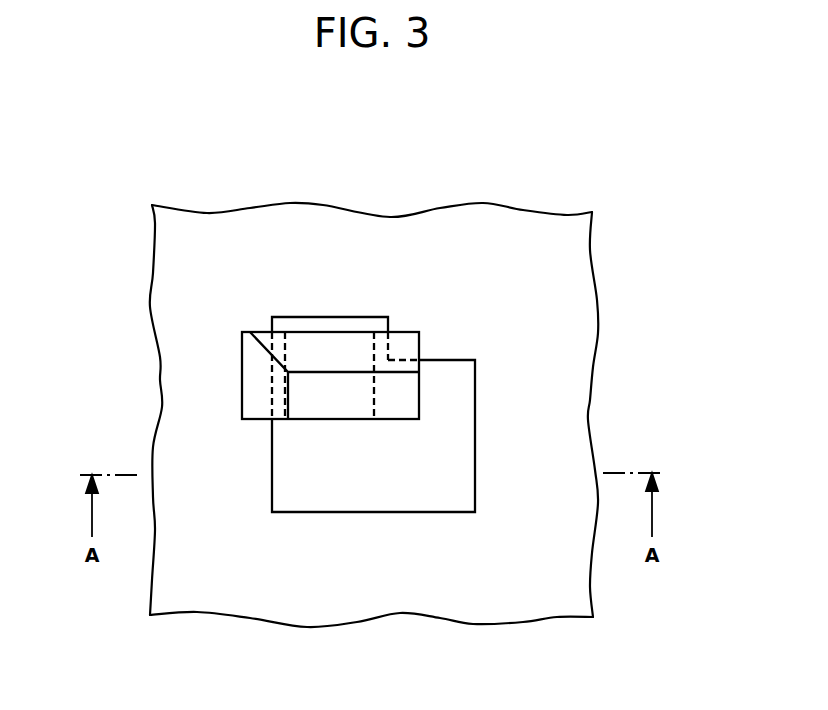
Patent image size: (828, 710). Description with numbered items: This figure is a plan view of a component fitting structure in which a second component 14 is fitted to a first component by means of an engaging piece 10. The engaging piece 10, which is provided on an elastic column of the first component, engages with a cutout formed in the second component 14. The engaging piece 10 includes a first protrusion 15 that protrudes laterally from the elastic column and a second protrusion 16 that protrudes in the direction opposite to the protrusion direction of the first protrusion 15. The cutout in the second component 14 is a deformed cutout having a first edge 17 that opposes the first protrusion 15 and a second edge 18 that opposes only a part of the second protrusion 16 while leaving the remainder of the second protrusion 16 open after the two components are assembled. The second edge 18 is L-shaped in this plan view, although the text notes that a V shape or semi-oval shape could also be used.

The engaging piece 10 is at (287, 127).
The second component 14 is at (567, 262).
The first protrusion 15 is at (253, 378).
The second protrusion 16 is at (407, 393).
The first edge 17 is at (273, 392).
The second edge 18 is at (388, 348).